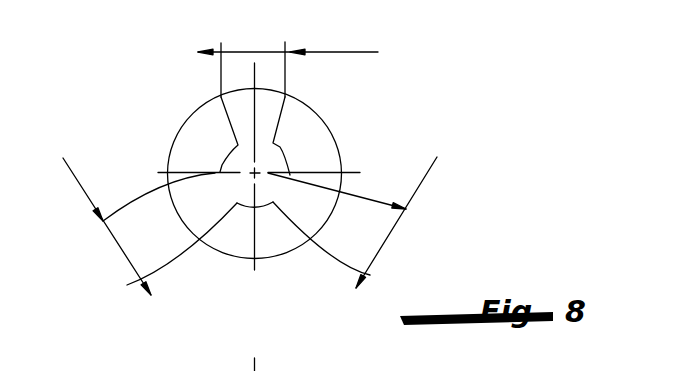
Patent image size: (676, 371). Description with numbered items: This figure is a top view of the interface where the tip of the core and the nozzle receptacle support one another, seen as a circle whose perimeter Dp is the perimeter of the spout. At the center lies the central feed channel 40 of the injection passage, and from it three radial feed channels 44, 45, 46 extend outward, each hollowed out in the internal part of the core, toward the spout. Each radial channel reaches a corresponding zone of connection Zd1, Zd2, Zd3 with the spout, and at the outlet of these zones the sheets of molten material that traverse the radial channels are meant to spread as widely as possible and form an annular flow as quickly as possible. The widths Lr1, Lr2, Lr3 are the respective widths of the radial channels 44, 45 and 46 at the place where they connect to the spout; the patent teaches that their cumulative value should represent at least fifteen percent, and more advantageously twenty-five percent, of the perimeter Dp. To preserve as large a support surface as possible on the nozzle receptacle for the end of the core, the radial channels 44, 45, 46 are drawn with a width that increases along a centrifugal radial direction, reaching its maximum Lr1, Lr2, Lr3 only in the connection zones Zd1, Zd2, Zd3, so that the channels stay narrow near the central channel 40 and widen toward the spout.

The central feed channel 40 is at (265, 167).
The radial feed channel 44 is at (247, 114).
The radial feed channel 45 is at (317, 195).
The radial feed channel 46 is at (214, 198).
The zone of connection Zd1 is at (246, 88).
The zone of connection Zd2 is at (332, 210).
The zone of connection Zd3 is at (181, 221).
The connection width Lr1 is at (331, 39).
The connection width Lr2 is at (405, 205).
The connection width Lr3 is at (88, 185).
The perimeter of the spout Dp is at (310, 113).